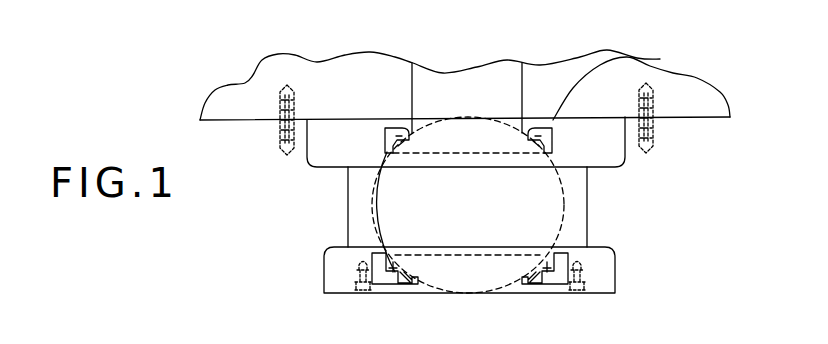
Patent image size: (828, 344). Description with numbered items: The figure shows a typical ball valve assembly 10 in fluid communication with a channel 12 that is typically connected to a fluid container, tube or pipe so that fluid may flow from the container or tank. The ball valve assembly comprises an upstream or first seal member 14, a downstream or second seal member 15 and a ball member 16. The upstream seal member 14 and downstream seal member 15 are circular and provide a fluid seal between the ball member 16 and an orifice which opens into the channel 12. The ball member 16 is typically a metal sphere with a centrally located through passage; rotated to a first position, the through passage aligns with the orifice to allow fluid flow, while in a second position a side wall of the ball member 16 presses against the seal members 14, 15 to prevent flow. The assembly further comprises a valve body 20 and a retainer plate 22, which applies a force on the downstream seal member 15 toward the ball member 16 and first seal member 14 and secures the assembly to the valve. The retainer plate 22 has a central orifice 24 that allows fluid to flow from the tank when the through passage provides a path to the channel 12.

The ball valve assembly 10 is at (708, 285).
The channel 12 is at (468, 92).
The first seal member 14 is at (660, 59).
The second seal member 15 is at (375, 208).
The ball member 16 is at (487, 202).
The valve body 20 is at (323, 257).
The retainer plate 22 is at (547, 292).
The central orifice 24 is at (425, 287).